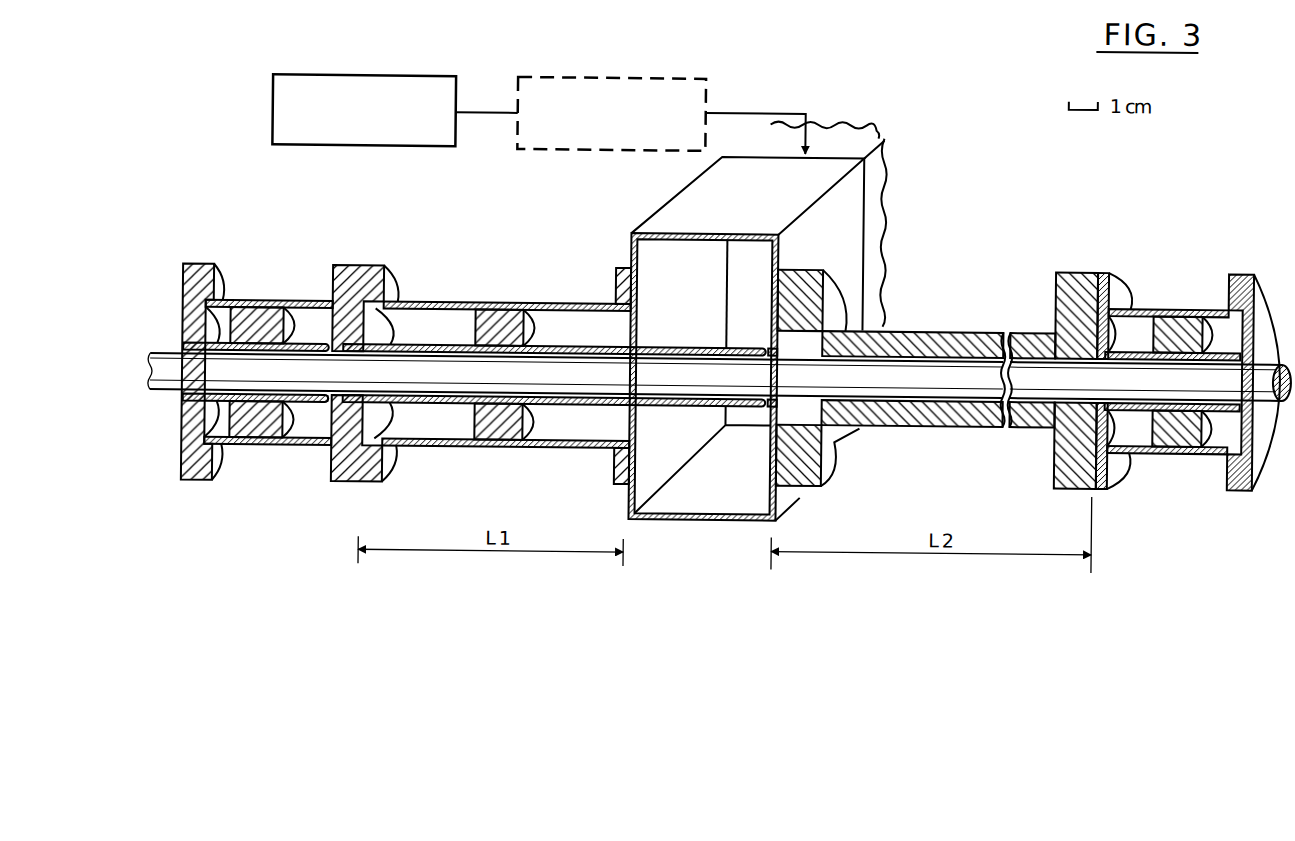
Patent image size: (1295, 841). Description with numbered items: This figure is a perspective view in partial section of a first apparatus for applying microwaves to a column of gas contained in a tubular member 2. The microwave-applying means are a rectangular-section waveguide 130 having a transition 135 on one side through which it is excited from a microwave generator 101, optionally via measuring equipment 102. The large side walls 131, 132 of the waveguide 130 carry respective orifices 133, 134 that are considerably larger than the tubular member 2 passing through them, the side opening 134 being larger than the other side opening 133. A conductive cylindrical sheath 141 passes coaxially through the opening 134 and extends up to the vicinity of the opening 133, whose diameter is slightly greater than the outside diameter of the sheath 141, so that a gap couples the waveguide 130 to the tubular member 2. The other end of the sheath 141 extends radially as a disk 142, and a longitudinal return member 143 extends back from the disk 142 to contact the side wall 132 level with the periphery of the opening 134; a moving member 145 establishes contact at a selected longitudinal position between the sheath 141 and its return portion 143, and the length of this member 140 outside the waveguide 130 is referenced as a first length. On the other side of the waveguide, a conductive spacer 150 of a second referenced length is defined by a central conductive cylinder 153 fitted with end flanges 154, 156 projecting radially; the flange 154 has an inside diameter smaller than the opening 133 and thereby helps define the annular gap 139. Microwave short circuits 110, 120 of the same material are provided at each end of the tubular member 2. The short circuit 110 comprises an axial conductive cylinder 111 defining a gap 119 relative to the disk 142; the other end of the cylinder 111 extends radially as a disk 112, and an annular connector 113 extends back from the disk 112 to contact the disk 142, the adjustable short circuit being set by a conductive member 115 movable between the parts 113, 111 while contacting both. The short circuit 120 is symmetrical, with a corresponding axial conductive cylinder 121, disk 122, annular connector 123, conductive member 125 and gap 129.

The tubular member 2 is at (716, 355).
The microwave generator 101 is at (364, 88).
The measuring equipment 102 is at (630, 93).
The microwave short circuit 110 is at (235, 355).
The axial conductive cylinder 111 is at (233, 395).
The disk 112 is at (176, 347).
The annular connector 113 is at (218, 348).
The conductive member 115 is at (262, 400).
The gap 119 is at (306, 444).
The microwave short circuit 120 is at (1195, 379).
The axial conductive cylinder 121 is at (1179, 440).
The disk 122 is at (1261, 360).
The annular connector 123 is at (1173, 360).
The conductive member 125 is at (1181, 423).
The gap 129 is at (1123, 422).
The waveguide 130 is at (774, 297).
The side wall 131 is at (857, 340).
The side wall 132 is at (601, 348).
The orifice 133 is at (756, 353).
The orifice 134 is at (692, 293).
The transition 135 is at (836, 200).
The annular gap 139 is at (703, 459).
The member 140 is at (554, 353).
The conductive cylindrical sheath 141 is at (554, 421).
The disk 142 is at (365, 351).
The longitudinal return member 143 is at (506, 351).
The moving member 145 is at (498, 402).
The conductive spacer 150 is at (937, 358).
The central conductive cylinder 153 is at (938, 345).
The end flange 154 is at (849, 375).
The end flange 156 is at (1073, 359).